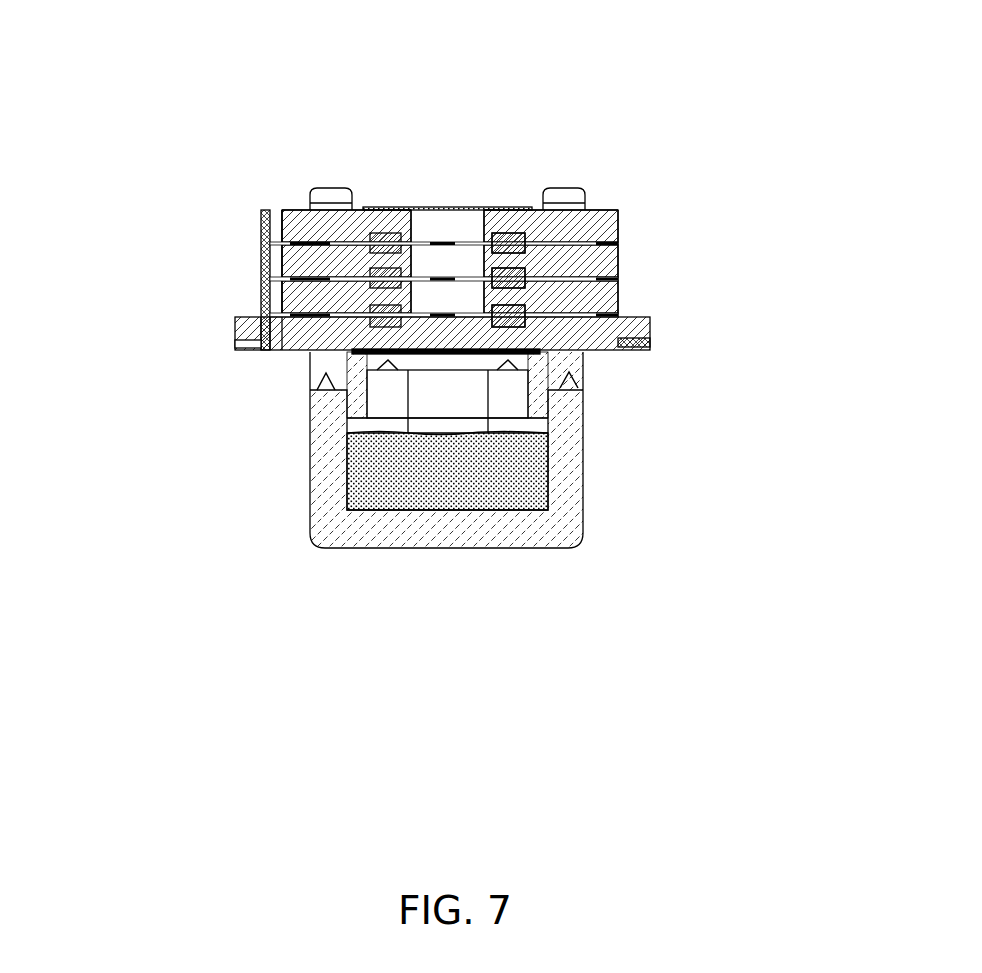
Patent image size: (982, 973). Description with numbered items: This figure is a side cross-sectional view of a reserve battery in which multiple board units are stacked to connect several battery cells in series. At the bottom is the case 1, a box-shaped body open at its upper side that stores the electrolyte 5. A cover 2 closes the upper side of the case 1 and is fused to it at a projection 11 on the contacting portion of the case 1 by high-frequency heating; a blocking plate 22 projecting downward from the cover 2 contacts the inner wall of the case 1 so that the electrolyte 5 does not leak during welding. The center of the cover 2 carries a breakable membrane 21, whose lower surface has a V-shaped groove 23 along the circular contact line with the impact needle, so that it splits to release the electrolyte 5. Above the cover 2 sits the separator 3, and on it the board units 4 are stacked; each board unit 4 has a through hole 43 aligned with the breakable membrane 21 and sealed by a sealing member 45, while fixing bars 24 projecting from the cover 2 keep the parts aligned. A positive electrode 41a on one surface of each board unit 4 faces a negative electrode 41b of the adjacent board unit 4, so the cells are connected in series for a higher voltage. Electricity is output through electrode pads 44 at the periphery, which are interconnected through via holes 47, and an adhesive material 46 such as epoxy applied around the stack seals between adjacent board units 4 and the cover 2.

The case 1 is at (567, 517).
The cover 2 is at (578, 368).
The separator 3 is at (310, 352).
The board unit 4 is at (617, 333).
The electrolyte 5 is at (370, 472).
The projection 11 is at (313, 382).
The breakable membrane 21 is at (580, 410).
The blocking plate 22 is at (358, 402).
The groove 23 is at (583, 395).
The fixing bar 24 is at (562, 197).
The positive electrode 41a is at (518, 320).
The negative electrode 41b is at (507, 238).
The through hole 43 is at (438, 217).
The electrode pad 44 is at (235, 342).
The sealing member 45 is at (383, 207).
The adhesive material 46 is at (618, 313).
The via hole 47 is at (277, 217).